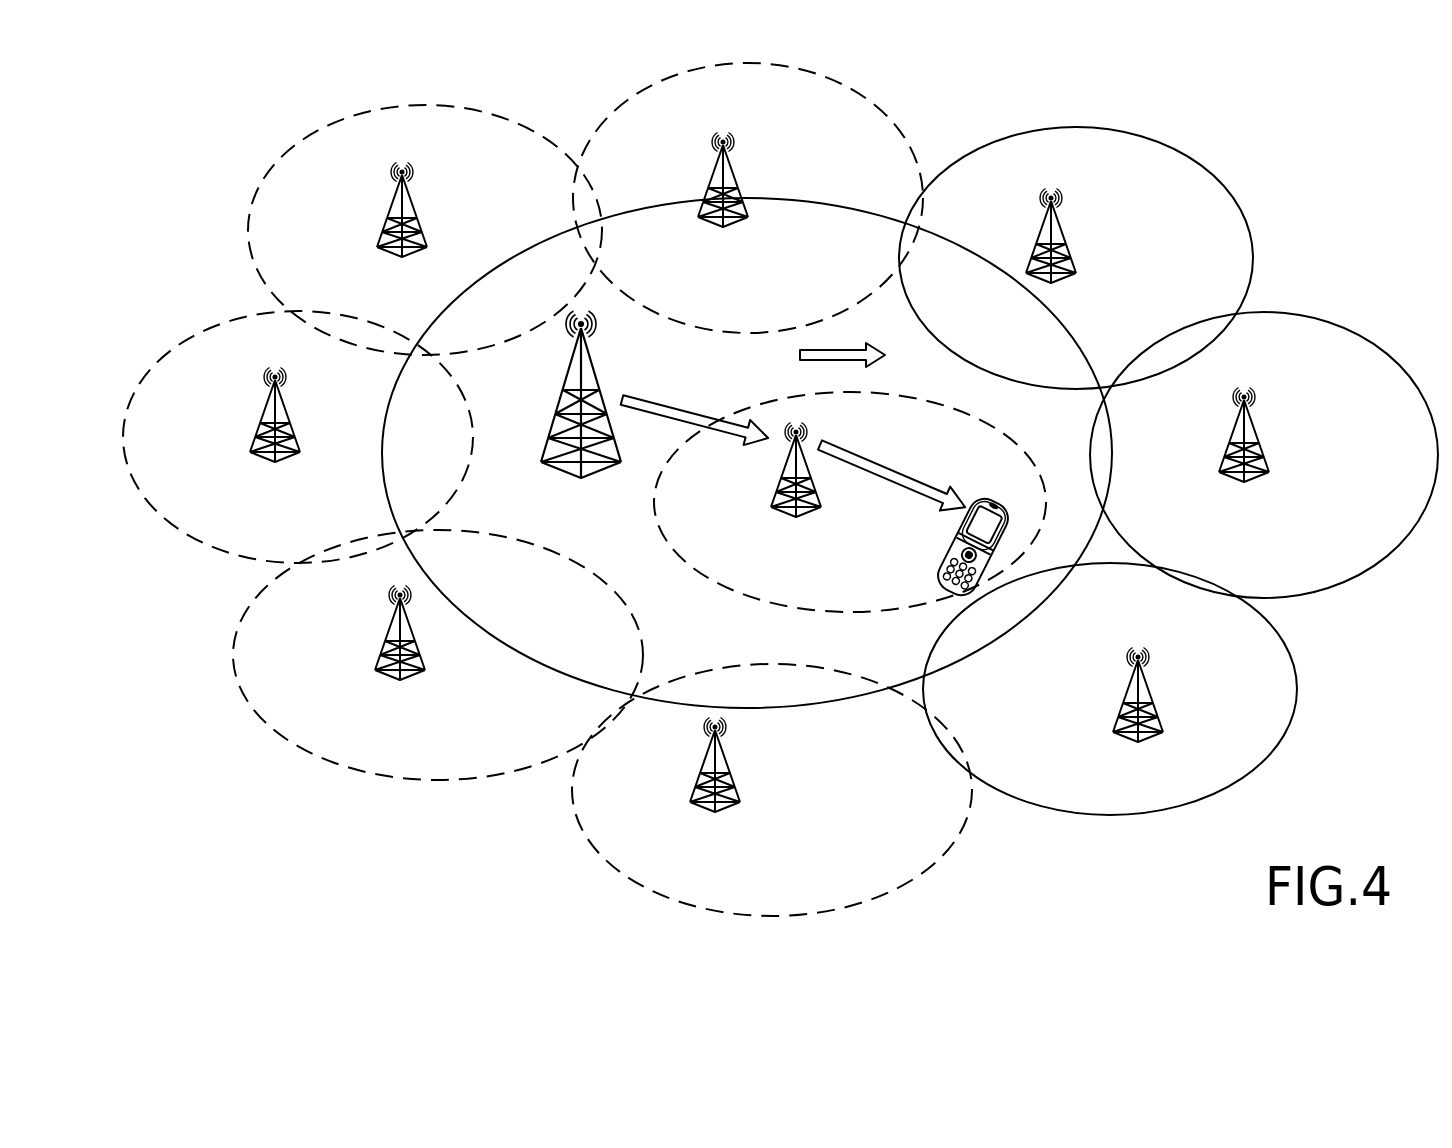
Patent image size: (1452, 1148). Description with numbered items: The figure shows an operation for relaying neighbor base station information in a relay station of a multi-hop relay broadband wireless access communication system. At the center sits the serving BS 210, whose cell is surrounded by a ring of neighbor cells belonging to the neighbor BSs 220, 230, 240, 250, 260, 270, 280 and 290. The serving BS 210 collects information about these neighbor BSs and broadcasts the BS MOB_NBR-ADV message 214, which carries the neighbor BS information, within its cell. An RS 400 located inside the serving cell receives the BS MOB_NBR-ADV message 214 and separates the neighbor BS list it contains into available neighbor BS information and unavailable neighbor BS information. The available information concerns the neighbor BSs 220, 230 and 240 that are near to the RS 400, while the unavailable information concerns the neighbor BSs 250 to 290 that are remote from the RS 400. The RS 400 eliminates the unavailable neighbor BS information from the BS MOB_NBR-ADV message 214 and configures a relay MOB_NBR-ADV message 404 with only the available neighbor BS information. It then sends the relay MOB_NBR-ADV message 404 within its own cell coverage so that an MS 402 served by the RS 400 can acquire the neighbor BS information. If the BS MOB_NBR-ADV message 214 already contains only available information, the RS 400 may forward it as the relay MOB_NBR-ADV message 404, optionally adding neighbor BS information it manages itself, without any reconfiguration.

The serving BS 210 is at (747, 453).
The neighbor BS 220 is at (1076, 258).
The neighbor BS 230 is at (1264, 455).
The neighbor BS 240 is at (1110, 689).
The neighbor BS 250 is at (772, 790).
The neighbor BS 260 is at (438, 655).
The neighbor BS 270 is at (298, 437).
The neighbor BS 280 is at (425, 230).
The neighbor BS 290 is at (748, 198).
The RS 400 is at (850, 502).
The MS 402 is at (934, 549).
The BS MOB_NBR-ADV message 214 is at (707, 404).
The relay MOB_NBR-ADV message 404 is at (918, 464).